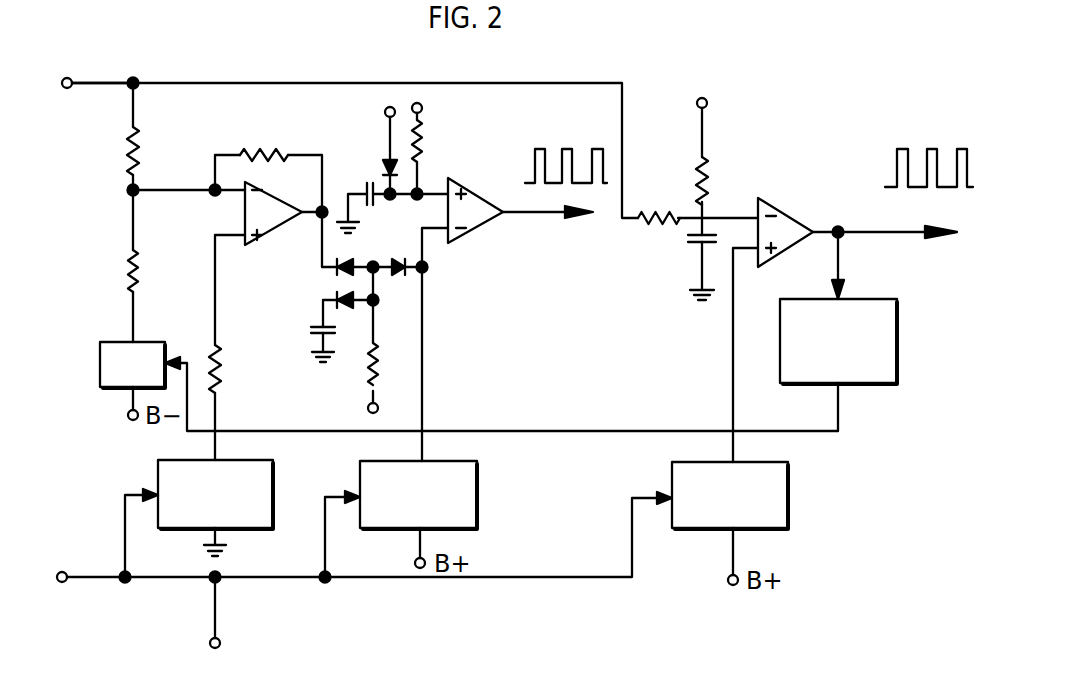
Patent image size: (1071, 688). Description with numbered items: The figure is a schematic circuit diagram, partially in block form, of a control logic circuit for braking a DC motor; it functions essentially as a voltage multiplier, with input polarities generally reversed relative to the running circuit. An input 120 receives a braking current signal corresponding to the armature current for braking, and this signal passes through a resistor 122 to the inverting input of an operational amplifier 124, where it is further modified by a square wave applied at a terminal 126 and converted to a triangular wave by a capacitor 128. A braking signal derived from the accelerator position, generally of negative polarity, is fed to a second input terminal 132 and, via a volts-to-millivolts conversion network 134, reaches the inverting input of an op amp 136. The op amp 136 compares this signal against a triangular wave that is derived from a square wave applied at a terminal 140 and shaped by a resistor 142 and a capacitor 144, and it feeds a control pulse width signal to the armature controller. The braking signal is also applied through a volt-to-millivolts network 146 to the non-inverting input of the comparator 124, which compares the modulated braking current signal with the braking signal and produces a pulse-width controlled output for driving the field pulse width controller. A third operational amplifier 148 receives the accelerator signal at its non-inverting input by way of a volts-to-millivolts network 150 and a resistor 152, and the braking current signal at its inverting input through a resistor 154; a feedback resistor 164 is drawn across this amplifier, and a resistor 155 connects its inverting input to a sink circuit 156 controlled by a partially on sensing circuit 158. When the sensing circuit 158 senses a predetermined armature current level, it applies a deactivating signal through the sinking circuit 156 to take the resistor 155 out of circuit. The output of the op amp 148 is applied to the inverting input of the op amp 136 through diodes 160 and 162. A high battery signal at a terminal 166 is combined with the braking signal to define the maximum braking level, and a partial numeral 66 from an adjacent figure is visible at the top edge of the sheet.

The reference numeral from adjacent figure 66 is at (295, 8).
The input 120 is at (70, 79).
The resistor 122 is at (655, 212).
The operational amplifier 124 is at (780, 206).
The terminal 126 is at (707, 102).
The capacitor 128 is at (690, 237).
The second input terminal 132 is at (64, 573).
The volts-to-millivolts conversion network 134 is at (477, 480).
The op amp 136 is at (482, 230).
The terminal 140 is at (422, 107).
The resistor 142 is at (423, 133).
The capacitor 144 is at (367, 180).
The volt-to-millivolts network 146 is at (788, 483).
The third operational amplifier 148 is at (277, 240).
The volts-to-millivolts network 150 is at (273, 475).
The resistor 152 is at (226, 370).
The resistor 154 is at (138, 133).
The resistor 155 is at (140, 262).
The sinking circuit 156 is at (148, 341).
The partially on sensing circuit 158 is at (897, 325).
The diode 160 is at (336, 272).
The diode 162 is at (395, 261).
The feedback resistor 164 is at (260, 153).
The terminal 166 is at (219, 640).